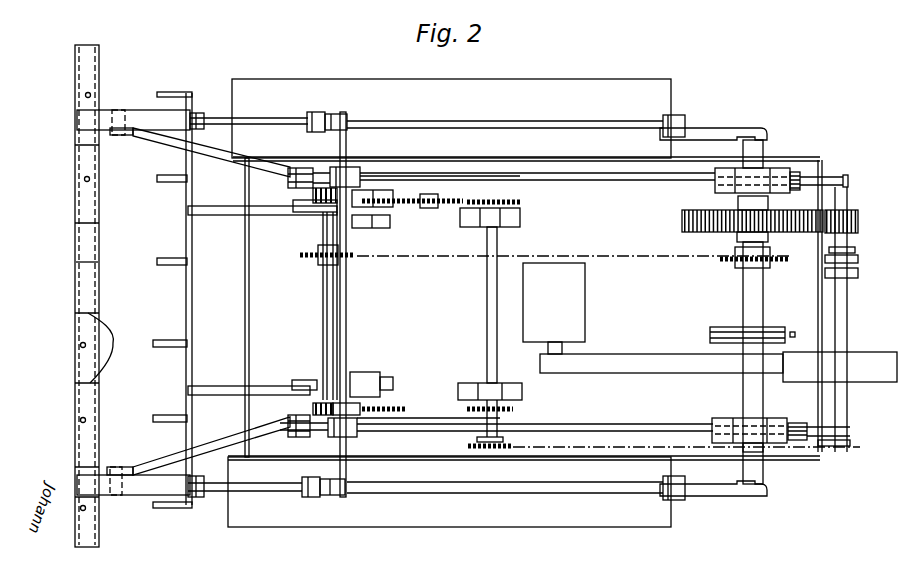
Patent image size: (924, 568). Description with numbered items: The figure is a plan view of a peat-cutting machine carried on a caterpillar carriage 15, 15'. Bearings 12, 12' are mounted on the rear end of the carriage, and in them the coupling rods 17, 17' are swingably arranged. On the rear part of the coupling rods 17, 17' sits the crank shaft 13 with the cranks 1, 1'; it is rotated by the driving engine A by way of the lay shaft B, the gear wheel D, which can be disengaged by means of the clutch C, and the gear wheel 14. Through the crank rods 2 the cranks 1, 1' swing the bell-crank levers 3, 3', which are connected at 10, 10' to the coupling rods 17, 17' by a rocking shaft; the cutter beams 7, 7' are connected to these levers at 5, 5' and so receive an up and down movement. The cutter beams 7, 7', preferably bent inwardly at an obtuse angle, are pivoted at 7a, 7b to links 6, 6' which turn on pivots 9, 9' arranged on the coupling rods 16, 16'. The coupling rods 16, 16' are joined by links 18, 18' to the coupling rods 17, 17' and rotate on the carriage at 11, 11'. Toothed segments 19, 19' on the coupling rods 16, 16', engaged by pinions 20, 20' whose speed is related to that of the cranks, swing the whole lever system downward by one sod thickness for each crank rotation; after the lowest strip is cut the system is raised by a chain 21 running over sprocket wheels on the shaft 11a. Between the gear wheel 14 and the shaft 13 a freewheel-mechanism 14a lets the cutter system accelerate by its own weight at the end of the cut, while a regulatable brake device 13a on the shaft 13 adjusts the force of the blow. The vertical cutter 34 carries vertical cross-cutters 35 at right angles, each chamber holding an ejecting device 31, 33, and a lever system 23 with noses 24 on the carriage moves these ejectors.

The crank 1 is at (713, 137).
The crank 1' is at (713, 477).
The crank rod 2 is at (471, 121).
The bell-crank lever 3 is at (256, 107).
The bell-crank lever 3' is at (253, 517).
The connection point 5 is at (203, 102).
The connection point 5' is at (195, 504).
The link 6 is at (211, 152).
The link 6' is at (211, 445).
The cutter beam 7 is at (133, 103).
The cutter beam 7' is at (133, 503).
The pivot 7a is at (120, 110).
The pivot 7b is at (118, 467).
The pivot 9 is at (286, 188).
The pivot 9' is at (281, 420).
The connection point 10 is at (342, 111).
The connection point 10' is at (340, 496).
The rotation point 11 is at (494, 193).
The rotation point 11' is at (474, 418).
The shaft 11a is at (487, 300).
The bearing 12 is at (819, 192).
The bearing 12' is at (819, 418).
The crank shaft 13 is at (742, 297).
The regulatable brake device 13a is at (775, 327).
The gear wheel 14 is at (685, 227).
The freewheel-mechanism 14a is at (738, 203).
The caterpillar carriage 15 is at (451, 107).
The caterpillar carriage 15' is at (449, 505).
The coupling rod 16 is at (440, 164).
The coupling rod 16' is at (428, 403).
The coupling rod 17 is at (537, 186).
The coupling rod 17' is at (606, 416).
The link 18 is at (327, 163).
The link 18' is at (318, 438).
The toothed segment 19 is at (372, 220).
The toothed segment 19' is at (370, 376).
The pinion 20 is at (304, 221).
The pinion 20' is at (306, 386).
The chain 21 is at (455, 206).
The lever system 23 is at (229, 215).
The nose 24 is at (160, 340).
The ejecting device 31 is at (86, 97).
The ejecting device 33 is at (88, 258).
The vertical cutter 34 is at (97, 241).
The vertical cross-cutter 35 is at (111, 348).
The driving engine A is at (586, 318).
The lay shaft B is at (847, 318).
The clutch C is at (858, 262).
The gear wheel D is at (858, 220).